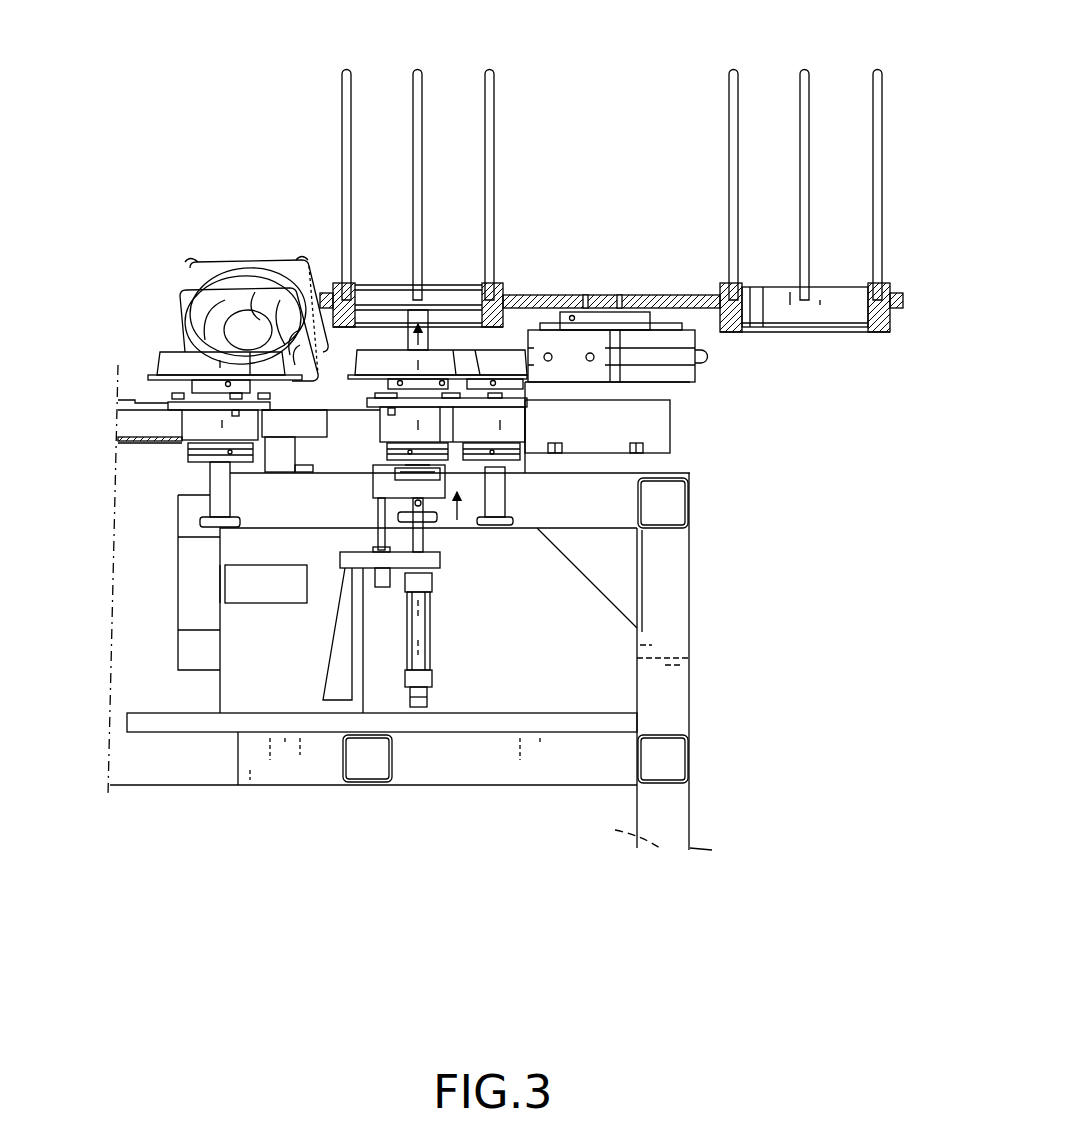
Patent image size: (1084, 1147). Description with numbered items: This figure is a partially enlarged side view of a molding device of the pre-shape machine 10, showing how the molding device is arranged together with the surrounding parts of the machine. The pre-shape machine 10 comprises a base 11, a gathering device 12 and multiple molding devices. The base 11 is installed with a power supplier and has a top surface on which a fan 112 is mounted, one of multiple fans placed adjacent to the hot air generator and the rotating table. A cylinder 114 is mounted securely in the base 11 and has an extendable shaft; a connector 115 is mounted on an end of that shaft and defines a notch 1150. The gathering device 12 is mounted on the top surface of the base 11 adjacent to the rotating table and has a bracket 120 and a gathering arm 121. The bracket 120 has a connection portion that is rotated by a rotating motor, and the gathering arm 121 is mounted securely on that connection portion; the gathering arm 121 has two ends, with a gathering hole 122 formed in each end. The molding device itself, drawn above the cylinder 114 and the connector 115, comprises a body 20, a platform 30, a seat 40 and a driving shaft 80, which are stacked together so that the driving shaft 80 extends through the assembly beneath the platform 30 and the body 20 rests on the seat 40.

The pre-shape machine 10 is at (712, 652).
The base 11 is at (680, 580).
The gathering device 12 is at (651, 60).
The body 20 is at (467, 355).
The platform 30 is at (438, 308).
The seat 40 is at (440, 427).
The driving shaft 80 is at (411, 317).
The fan 112 is at (238, 272).
The cylinder 114 is at (430, 628).
The connector 115 is at (433, 492).
The notch 1150 is at (397, 477).
The bracket 120 is at (680, 421).
The gathering arm 121 is at (643, 297).
The gathering hole 122 is at (742, 318).